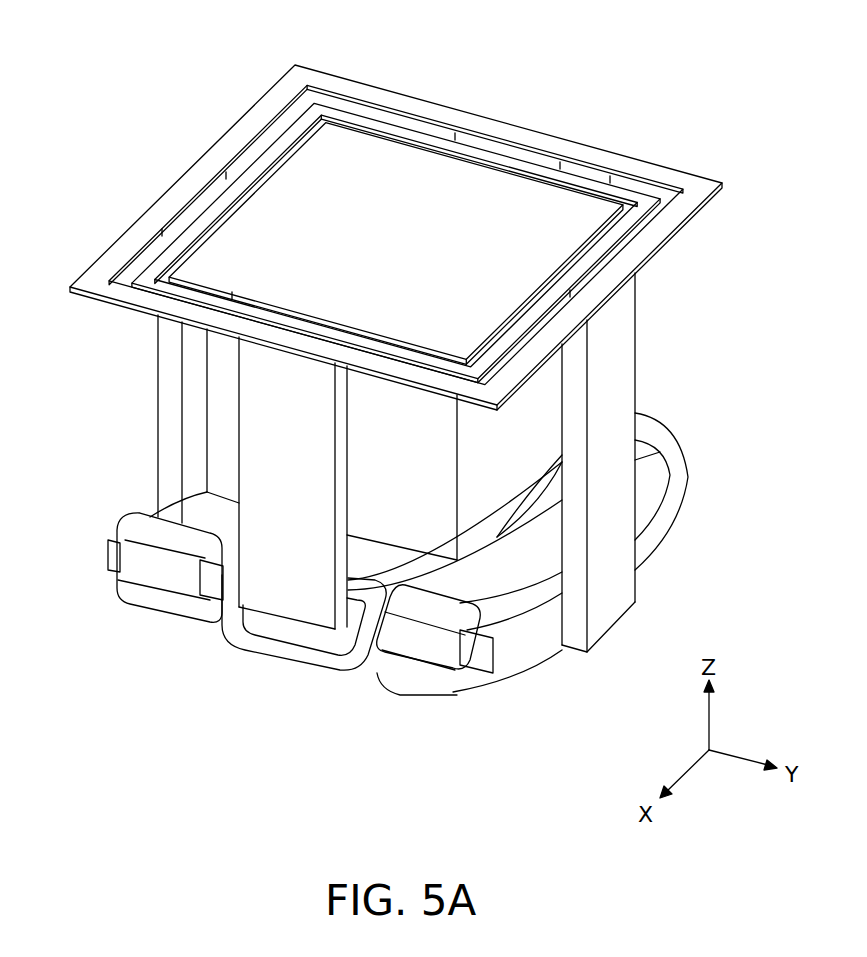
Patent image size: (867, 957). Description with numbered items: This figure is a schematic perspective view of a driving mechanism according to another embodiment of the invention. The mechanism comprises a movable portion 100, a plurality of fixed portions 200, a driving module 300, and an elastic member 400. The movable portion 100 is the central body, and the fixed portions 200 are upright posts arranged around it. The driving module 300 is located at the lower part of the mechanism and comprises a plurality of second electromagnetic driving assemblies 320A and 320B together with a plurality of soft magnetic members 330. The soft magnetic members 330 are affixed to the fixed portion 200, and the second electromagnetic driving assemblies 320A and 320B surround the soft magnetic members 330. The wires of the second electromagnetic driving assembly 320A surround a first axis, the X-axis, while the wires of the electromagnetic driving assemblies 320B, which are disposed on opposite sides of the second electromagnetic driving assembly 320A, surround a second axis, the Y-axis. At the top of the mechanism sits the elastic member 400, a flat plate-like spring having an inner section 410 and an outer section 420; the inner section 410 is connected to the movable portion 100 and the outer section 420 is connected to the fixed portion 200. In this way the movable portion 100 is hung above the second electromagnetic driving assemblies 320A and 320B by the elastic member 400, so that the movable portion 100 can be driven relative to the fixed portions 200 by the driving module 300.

The movable portion 100 is at (540, 405).
The fixed portions 200 is at (628, 349).
The driving module 300 is at (112, 628).
The second electromagnetic driving assembly 320A is at (287, 653).
The second electromagnetic driving assemblies 320B is at (150, 622).
The soft magnetic members 330 is at (523, 655).
The elastic member 400 is at (510, 106).
The inner section 410 is at (397, 180).
The outer section 420 is at (245, 145).